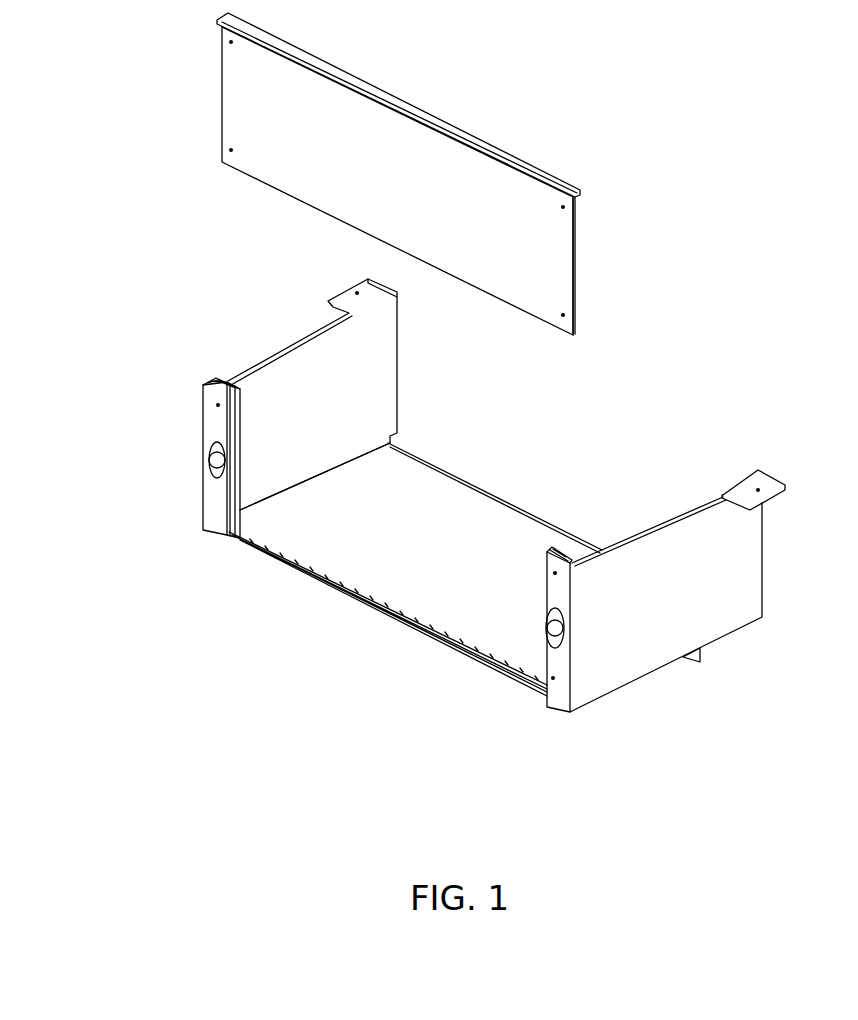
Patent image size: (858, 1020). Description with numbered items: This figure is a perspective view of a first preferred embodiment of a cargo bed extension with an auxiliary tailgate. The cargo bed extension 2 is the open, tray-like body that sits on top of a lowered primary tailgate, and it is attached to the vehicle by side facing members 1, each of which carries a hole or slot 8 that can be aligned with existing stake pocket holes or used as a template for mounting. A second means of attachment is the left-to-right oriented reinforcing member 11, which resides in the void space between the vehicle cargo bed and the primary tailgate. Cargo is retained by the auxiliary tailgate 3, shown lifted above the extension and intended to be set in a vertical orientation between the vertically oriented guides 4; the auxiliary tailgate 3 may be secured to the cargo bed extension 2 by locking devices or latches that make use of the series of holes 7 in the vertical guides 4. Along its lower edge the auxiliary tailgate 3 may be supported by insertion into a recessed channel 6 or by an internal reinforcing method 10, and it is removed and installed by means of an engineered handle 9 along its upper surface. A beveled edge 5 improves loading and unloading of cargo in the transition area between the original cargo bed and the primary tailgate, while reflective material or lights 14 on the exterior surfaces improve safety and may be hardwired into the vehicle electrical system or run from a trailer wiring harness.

The side facing members 1 is at (767, 477).
The cargo bed extension 2 is at (322, 330).
The auxiliary tailgate 3 is at (221, 90).
The vertically oriented guides 4 is at (225, 380).
The beveled edge 5 is at (520, 510).
The recessed channel 6 is at (355, 597).
The series of holes 7 is at (217, 517).
The hole or slot 8 is at (767, 492).
The engineered handle 9 is at (558, 178).
The internal reinforcing method 10 is at (575, 333).
The reinforcing member 11 is at (700, 660).
The reflective material or lights 14 is at (547, 630).